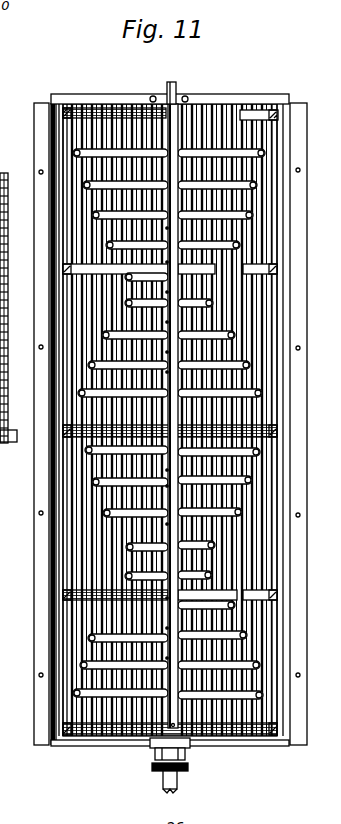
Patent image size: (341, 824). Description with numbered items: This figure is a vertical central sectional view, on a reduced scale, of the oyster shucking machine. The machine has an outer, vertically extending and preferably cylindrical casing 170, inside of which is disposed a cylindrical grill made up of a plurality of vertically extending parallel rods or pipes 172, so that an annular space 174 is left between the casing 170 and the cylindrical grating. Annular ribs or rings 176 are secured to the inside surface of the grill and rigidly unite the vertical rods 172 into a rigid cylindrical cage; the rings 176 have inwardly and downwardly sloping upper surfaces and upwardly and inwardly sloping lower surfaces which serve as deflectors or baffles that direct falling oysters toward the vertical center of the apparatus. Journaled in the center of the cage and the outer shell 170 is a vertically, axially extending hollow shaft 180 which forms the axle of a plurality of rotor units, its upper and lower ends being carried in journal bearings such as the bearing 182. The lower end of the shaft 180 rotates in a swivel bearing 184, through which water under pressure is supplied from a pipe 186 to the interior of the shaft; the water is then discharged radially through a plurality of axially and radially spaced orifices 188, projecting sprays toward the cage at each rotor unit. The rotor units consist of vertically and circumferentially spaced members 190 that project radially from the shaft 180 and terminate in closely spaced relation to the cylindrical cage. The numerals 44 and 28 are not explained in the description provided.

The casing 170 is at (42, 112).
The rods 172 is at (56, 110).
The annular rings 176 is at (78, 104).
The journal bearing 182 is at (166, 96).
The hollow shaft 180 is at (182, 118).
The orifices 188 is at (170, 168).
The conveyor frame 44 is at (10, 486).
The annular space 174 is at (50, 518).
The rotor members 190 is at (88, 638).
The shaft 28 is at (170, 703).
The swivel bearing 184 is at (188, 737).
The pipe 186 is at (165, 770).